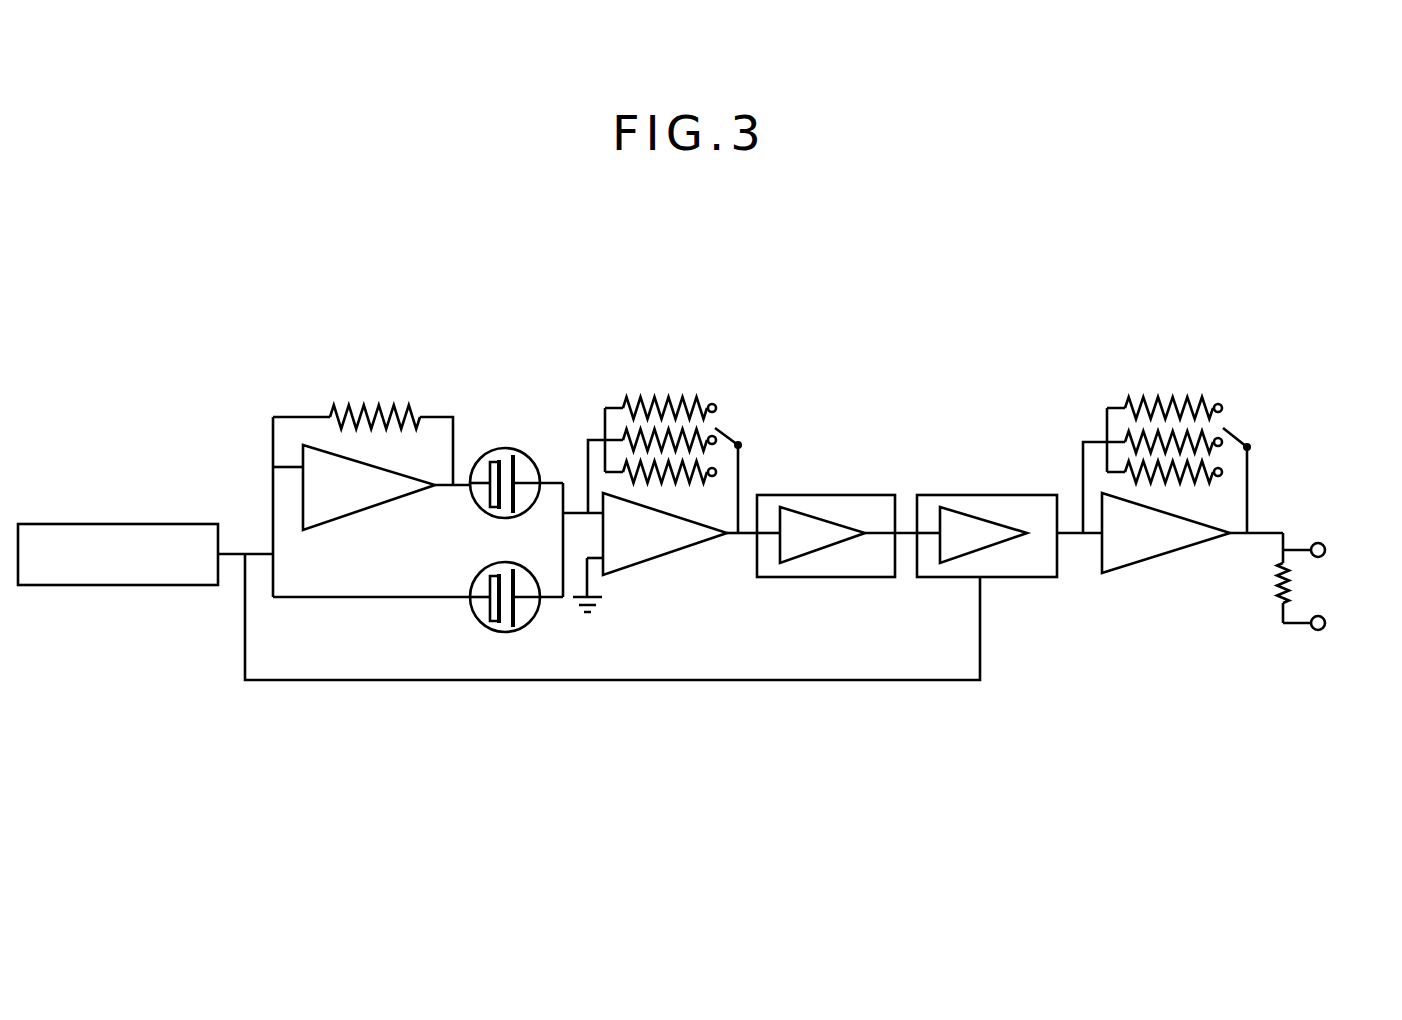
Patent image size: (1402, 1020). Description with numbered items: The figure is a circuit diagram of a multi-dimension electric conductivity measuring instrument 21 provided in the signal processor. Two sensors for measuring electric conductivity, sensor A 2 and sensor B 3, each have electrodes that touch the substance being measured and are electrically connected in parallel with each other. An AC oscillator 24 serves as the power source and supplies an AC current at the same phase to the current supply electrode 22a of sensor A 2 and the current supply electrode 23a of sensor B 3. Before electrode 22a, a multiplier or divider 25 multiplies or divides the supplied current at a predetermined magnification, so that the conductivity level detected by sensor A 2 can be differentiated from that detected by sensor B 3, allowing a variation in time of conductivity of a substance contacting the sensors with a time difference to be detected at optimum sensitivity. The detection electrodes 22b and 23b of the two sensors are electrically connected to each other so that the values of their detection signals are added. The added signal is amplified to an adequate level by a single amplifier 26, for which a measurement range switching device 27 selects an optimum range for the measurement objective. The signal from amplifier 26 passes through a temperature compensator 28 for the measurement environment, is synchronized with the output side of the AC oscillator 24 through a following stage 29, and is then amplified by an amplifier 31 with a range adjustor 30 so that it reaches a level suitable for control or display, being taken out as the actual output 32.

The sensor A 2 is at (490, 450).
The sensor B 3 is at (486, 570).
The multi-dimension electric conductivity measuring instrument 21 is at (832, 412).
The electrode for current supply 22a is at (488, 507).
The electrode for electric conductivity detection 22b is at (516, 470).
The electrode for current supply 23a is at (490, 626).
The electrode for electric conductivity detection 23b is at (523, 626).
The AC oscillator 24 is at (132, 524).
The multiplier or divider 25 is at (352, 403).
The amplifier 26 is at (665, 556).
The measurement range switching device 27 is at (666, 390).
The temperature compensator 28 is at (780, 494).
The amplifier stage 29 is at (932, 494).
The range adjustor 30 is at (1195, 392).
The amplifier 31 is at (1168, 551).
The output 32 is at (1333, 581).